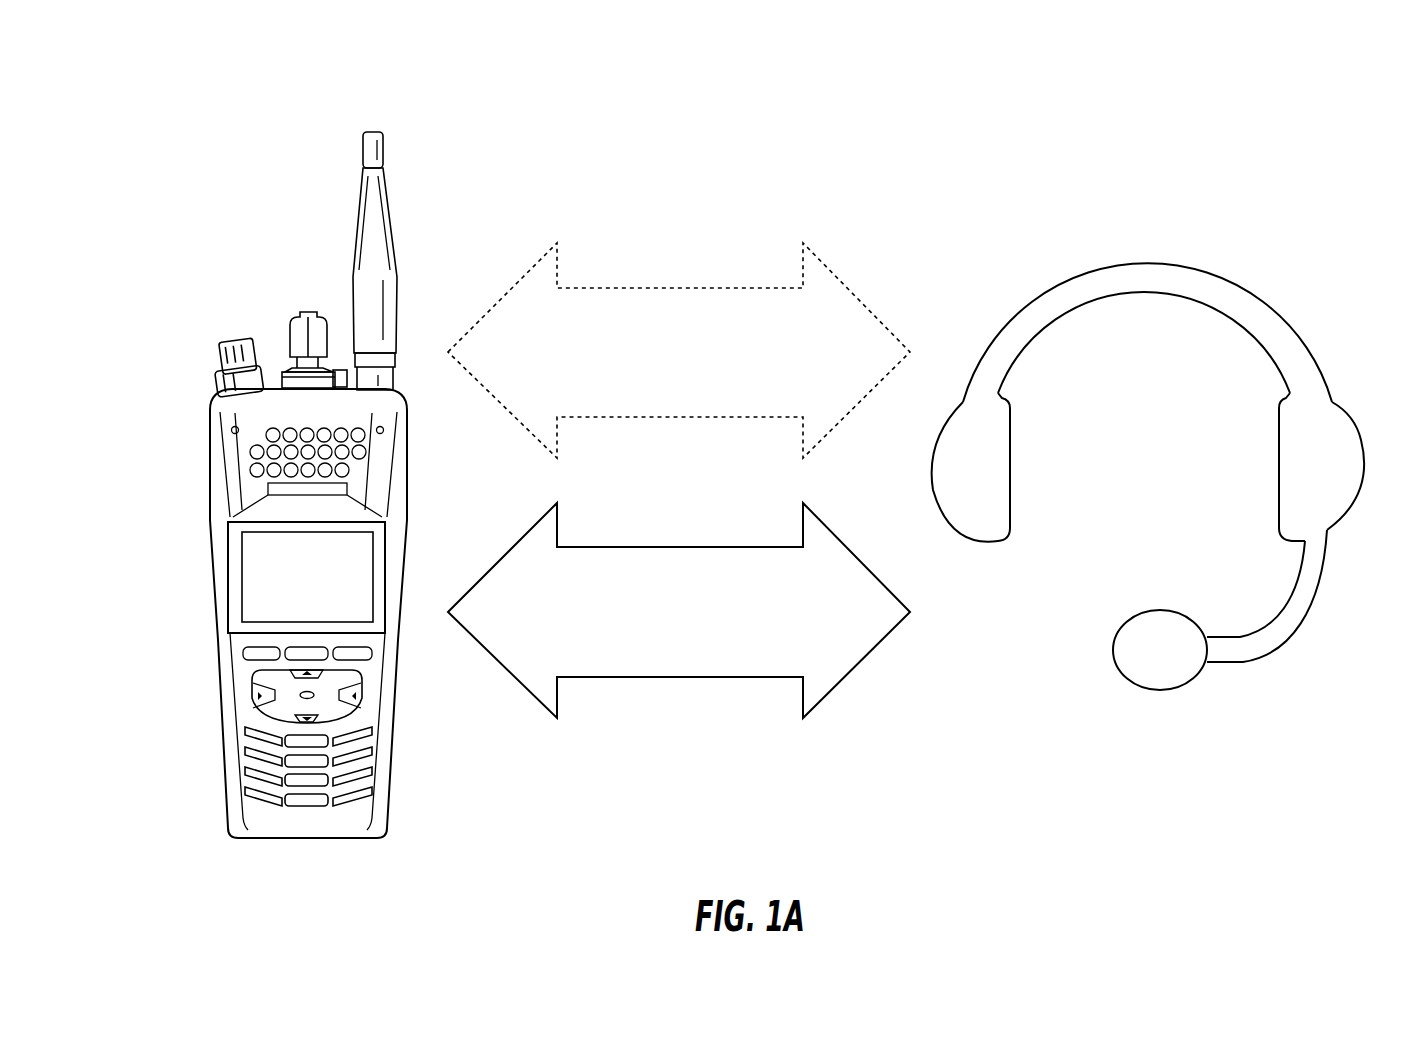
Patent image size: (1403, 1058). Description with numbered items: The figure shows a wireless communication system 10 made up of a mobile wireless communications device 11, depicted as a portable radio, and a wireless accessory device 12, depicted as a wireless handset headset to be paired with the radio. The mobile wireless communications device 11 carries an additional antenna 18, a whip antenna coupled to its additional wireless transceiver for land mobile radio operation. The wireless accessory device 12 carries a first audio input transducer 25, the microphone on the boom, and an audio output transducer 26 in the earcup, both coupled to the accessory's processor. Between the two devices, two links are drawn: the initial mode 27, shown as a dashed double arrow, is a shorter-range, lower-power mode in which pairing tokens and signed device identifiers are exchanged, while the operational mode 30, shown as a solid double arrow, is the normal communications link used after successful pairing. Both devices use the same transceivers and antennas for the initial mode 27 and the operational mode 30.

The wireless communication system 10 is at (173, 150).
The mobile wireless communications device 11 is at (254, 309).
The wireless accessory device 12 is at (1027, 284).
The additional antenna 18 is at (388, 202).
The first audio input transducer 25 is at (1120, 670).
The audio output transducer 26 is at (1279, 470).
The initial mode 27 is at (667, 408).
The operational mode 30 is at (667, 650).